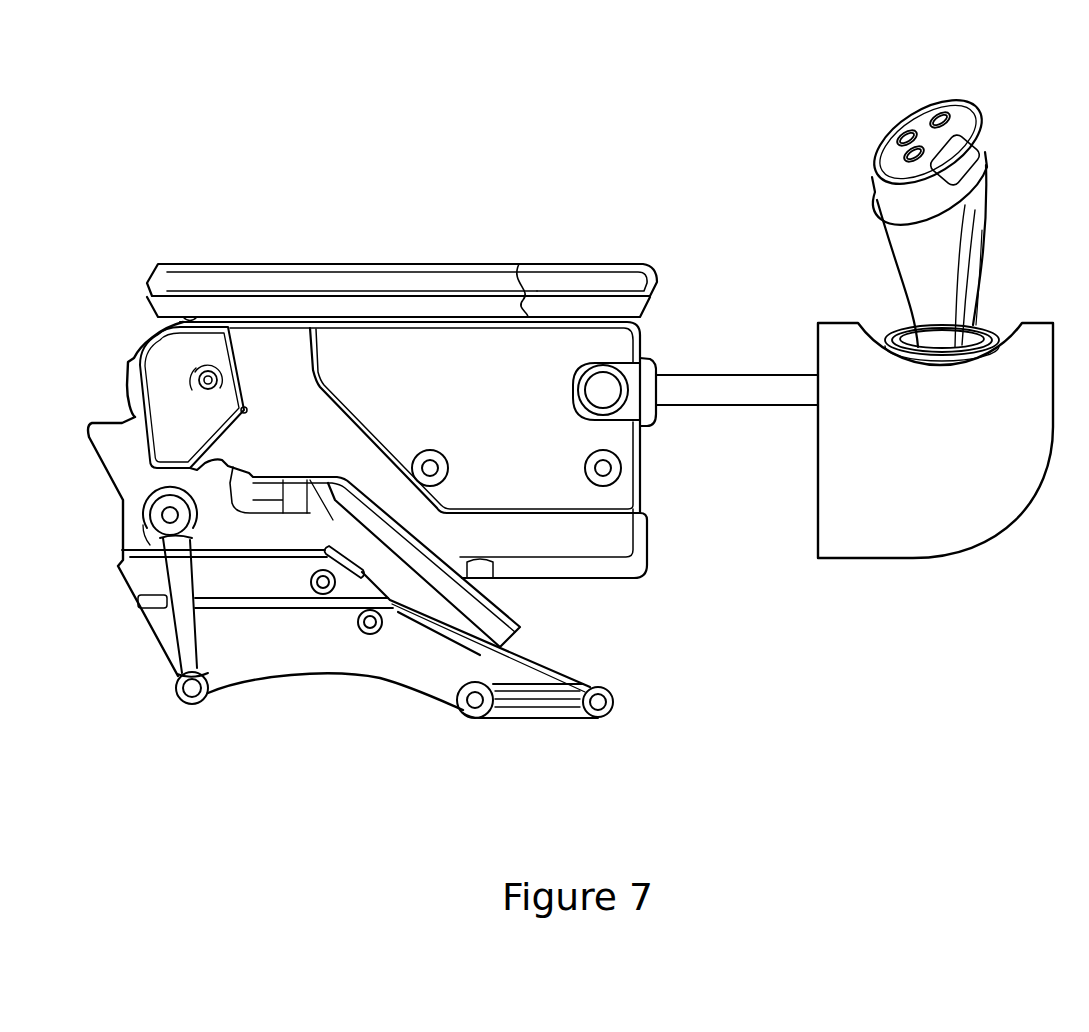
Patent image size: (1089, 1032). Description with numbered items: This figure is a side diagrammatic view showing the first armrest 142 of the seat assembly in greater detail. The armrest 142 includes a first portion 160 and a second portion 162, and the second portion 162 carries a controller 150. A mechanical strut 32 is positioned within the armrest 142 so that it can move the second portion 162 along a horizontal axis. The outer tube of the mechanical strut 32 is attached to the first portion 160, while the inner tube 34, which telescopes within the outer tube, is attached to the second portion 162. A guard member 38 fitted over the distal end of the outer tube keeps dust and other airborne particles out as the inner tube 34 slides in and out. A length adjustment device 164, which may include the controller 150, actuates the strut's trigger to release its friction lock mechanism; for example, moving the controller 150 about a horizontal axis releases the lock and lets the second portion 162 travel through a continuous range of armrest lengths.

The first portion 160 is at (378, 230).
The guard member 38 is at (651, 362).
The mechanical strut 32 is at (705, 365).
The inner tube 34 is at (754, 373).
The second portion 162 is at (818, 234).
The first armrest 142 is at (902, 70).
The controller 150 is at (977, 137).
The length adjustment device 164 is at (973, 240).